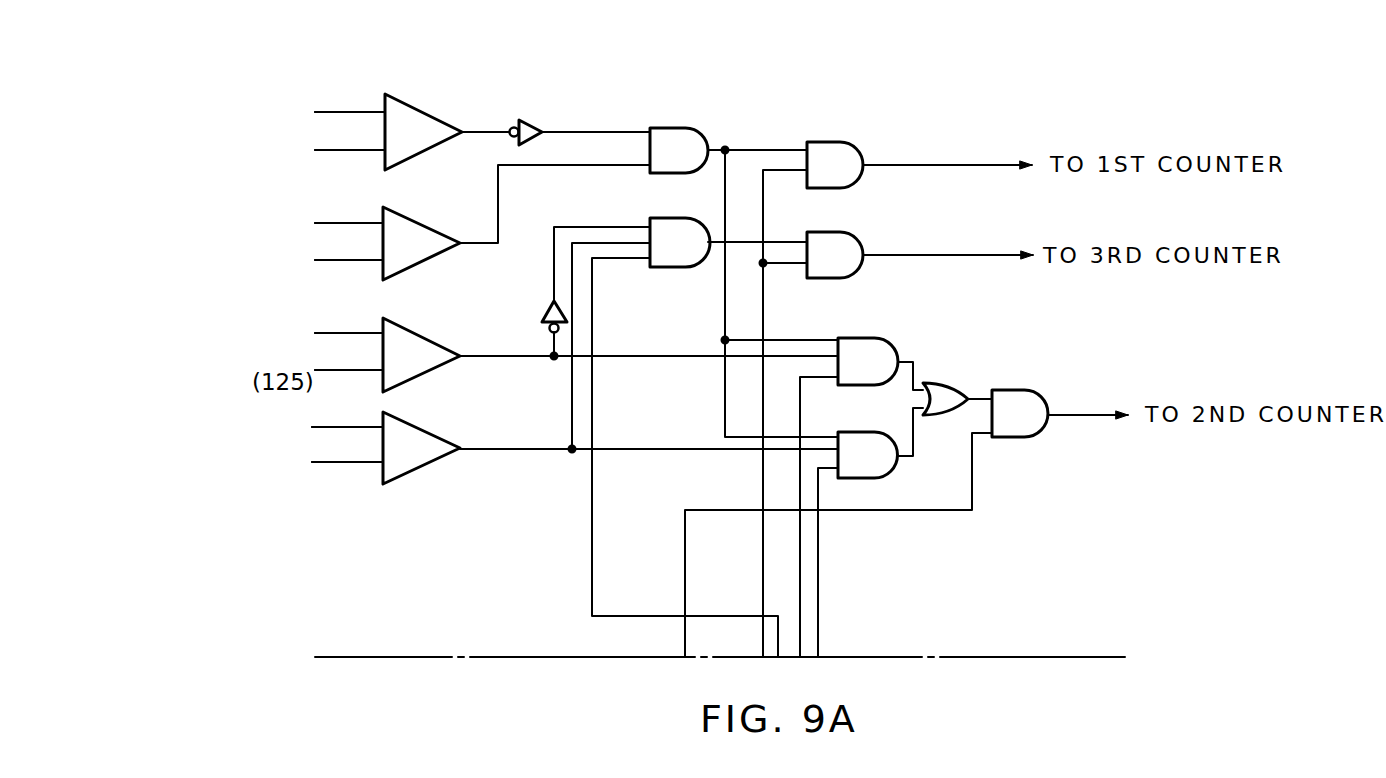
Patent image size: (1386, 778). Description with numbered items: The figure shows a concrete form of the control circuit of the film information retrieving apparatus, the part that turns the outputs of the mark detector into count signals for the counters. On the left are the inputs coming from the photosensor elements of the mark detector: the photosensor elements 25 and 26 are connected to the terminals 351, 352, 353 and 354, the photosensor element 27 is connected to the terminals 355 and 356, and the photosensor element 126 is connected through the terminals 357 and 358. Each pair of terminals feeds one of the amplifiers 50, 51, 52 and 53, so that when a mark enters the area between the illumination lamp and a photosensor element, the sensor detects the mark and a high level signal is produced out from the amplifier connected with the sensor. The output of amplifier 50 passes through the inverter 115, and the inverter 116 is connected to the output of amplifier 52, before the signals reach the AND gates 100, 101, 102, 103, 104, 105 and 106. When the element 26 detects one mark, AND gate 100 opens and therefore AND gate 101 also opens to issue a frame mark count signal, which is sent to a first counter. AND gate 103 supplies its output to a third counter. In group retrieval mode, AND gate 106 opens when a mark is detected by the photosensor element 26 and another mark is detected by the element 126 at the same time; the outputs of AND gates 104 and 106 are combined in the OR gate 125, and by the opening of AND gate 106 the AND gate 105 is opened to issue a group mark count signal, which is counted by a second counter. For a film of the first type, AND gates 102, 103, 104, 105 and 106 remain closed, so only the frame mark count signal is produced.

The photosensor element 25 is at (327, 131).
The photosensor element 26 is at (324, 241).
The photosensor element 27 is at (323, 351).
The photosensor element 126 is at (320, 444).
The terminal 351 is at (333, 112).
The terminal 352 is at (357, 150).
The terminal 353 is at (340, 222).
The terminal 354 is at (360, 260).
The terminal 355 is at (330, 333).
The terminal 356 is at (340, 370).
The terminal 357 is at (367, 427).
The terminal 358 is at (348, 462).
The amplifier 50 is at (423, 112).
The amplifier 51 is at (423, 223).
The amplifier 52 is at (423, 336).
The amplifier 53 is at (424, 467).
The inverter 115 is at (533, 122).
The inverter 116 is at (548, 306).
The AND gate 100 is at (688, 128).
The AND gate 101 is at (840, 142).
The AND gate 102 is at (668, 218).
The AND gate 103 is at (841, 232).
The AND gate 104 is at (864, 338).
The AND gate 105 is at (1026, 390).
The AND gate 106 is at (888, 478).
The OR gate 125 is at (940, 384).